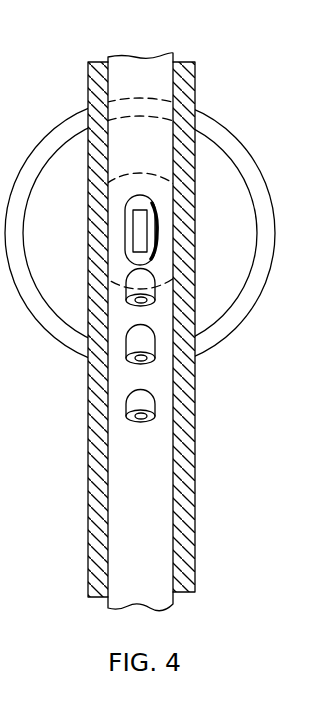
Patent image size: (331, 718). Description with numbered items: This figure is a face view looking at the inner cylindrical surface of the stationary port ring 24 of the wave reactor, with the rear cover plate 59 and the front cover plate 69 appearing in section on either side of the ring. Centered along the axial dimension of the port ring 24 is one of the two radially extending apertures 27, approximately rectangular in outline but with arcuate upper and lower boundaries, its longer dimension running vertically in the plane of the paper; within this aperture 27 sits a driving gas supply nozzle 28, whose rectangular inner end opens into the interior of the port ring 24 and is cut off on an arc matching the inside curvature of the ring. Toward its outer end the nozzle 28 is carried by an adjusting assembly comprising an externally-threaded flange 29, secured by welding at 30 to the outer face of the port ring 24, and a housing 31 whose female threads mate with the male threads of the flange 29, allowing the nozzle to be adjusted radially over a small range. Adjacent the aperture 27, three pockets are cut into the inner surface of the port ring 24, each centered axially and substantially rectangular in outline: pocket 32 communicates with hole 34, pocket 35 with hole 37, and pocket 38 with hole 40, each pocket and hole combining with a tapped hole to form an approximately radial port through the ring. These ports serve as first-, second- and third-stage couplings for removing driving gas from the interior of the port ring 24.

The port ring 24 is at (141, 313).
The aperture 27 is at (139, 230).
The nozzle 28 is at (128, 232).
The externally-threaded flange 29 is at (236, 182).
The weld 30 is at (140, 172).
The housing 31 is at (230, 136).
The pocket 32 is at (143, 282).
The hole 34 is at (141, 303).
The pocket 35 is at (143, 342).
The hole 37 is at (141, 362).
The pocket 38 is at (143, 403).
The hole 40 is at (140, 418).
The rear cover plate 59 is at (97, 510).
The front cover plate 69 is at (183, 493).